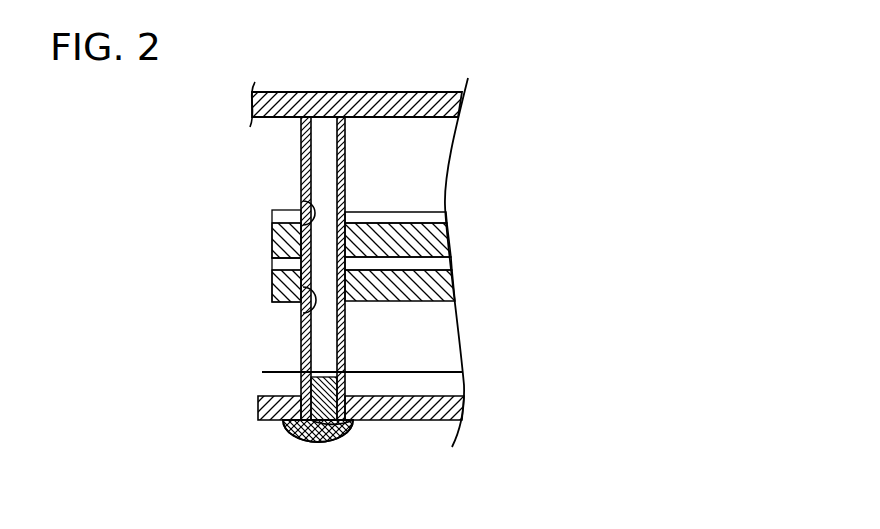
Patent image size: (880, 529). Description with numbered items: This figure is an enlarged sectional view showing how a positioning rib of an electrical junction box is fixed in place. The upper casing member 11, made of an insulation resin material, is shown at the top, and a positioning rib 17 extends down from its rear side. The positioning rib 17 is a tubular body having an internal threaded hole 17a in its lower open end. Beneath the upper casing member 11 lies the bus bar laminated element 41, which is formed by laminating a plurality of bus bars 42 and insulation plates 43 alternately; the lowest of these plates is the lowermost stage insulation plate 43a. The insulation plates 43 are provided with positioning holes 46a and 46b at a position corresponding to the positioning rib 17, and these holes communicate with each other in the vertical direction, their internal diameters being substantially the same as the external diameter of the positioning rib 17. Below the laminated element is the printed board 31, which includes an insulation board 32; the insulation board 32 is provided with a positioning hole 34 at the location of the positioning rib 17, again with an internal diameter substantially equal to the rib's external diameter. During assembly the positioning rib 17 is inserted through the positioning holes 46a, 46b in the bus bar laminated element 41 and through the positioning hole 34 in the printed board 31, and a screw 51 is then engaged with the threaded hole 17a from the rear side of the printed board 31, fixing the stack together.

The upper casing member 11 is at (394, 104).
The positioning rib 17 is at (300, 156).
The threaded hole 17a is at (323, 421).
The printed board 31 is at (448, 394).
The insulation board 32 is at (453, 412).
The positioning hole 34 is at (302, 382).
The bus bar laminated element 41 is at (471, 232).
The bus bar 42 is at (428, 212).
The insulation plate 43 is at (425, 240).
The lowermost stage insulation plate 43a is at (454, 285).
The positioning hole 46a is at (299, 320).
The positioning hole 46b is at (300, 199).
The screw 51 is at (302, 443).